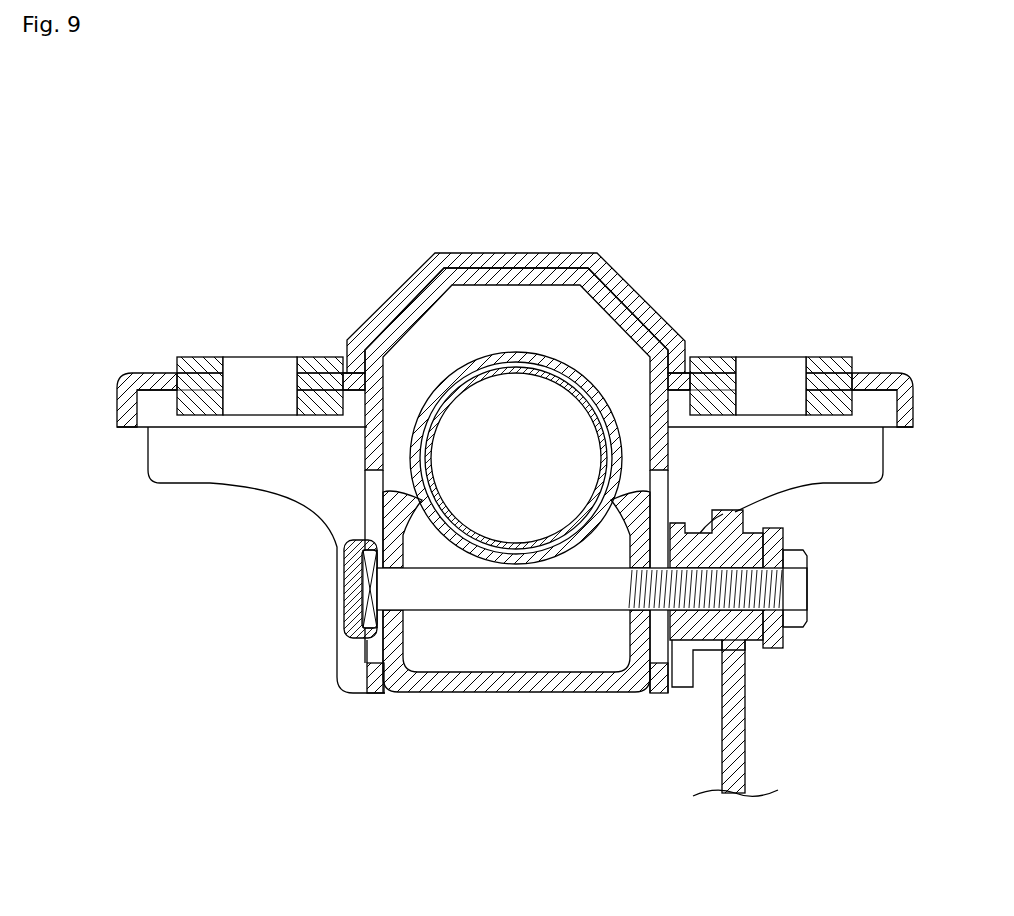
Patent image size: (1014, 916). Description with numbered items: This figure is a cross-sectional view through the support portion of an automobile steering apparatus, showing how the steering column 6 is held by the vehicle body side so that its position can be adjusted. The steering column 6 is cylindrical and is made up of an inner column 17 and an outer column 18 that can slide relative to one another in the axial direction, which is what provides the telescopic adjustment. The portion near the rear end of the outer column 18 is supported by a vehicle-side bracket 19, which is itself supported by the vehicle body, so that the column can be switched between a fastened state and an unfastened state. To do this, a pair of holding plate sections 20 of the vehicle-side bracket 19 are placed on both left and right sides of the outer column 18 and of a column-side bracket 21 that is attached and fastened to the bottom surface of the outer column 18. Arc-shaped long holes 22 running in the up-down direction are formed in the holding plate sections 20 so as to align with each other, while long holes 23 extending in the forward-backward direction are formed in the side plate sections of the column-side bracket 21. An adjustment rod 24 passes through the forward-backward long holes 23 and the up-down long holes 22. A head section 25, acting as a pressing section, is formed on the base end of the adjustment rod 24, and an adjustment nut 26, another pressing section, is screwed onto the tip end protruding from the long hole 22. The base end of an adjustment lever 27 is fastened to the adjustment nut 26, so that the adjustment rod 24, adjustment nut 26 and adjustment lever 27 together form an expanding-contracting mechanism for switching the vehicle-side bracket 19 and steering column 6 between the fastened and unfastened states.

The steering column 6 is at (526, 352).
The inner column 17 is at (600, 400).
The outer column 18 is at (457, 372).
The vehicle-side bracket 19 is at (630, 288).
The holding plate sections 20 is at (368, 449).
The column-side bracket 21 is at (551, 684).
The arc-shaped long holes 22 is at (367, 658).
The long holes 23 is at (548, 640).
The adjustment rod 24 is at (463, 596).
The head section 25 is at (353, 599).
The adjustment nut 26 is at (720, 625).
The adjustment lever 27 is at (735, 756).